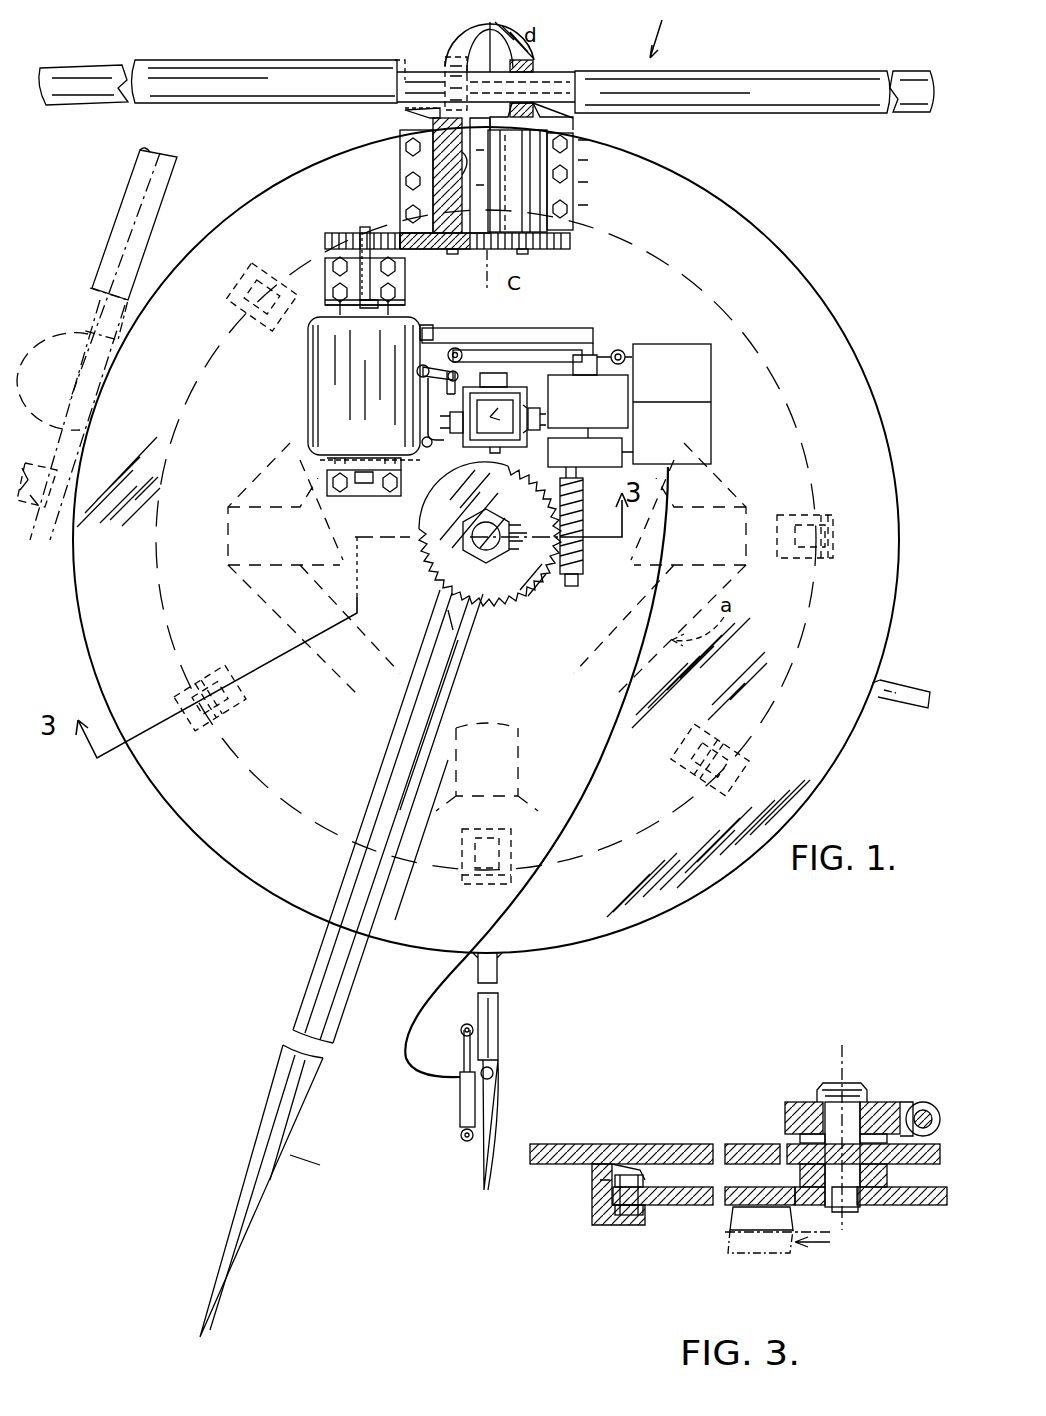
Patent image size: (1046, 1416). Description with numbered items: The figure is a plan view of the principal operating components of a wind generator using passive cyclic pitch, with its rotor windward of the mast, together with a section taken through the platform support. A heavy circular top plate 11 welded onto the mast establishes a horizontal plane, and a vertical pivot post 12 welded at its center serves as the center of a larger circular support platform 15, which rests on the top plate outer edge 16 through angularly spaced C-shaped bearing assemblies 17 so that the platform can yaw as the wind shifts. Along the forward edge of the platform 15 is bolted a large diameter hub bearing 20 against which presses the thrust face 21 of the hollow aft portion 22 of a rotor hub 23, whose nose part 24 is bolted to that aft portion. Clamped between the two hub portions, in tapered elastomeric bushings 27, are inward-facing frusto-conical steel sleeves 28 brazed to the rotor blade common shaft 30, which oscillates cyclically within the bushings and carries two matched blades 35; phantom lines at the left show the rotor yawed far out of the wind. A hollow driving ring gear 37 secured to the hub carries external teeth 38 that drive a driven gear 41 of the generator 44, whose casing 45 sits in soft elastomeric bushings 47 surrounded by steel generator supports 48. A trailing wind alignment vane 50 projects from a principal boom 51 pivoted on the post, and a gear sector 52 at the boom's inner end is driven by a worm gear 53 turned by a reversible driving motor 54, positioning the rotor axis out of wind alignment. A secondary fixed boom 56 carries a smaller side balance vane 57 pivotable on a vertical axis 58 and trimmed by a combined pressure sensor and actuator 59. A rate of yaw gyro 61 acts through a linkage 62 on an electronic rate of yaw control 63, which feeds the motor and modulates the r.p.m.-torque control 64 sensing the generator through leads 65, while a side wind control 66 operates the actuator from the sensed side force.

In FIG. 1, the top plate 11 is at (790, 385).
In FIG. 3, the top plate 11 is at (680, 1205).
In FIG. 1, the vertical pivot post 12 is at (488, 522).
In FIG. 3, the vertical pivot post 12 is at (850, 1114).
In FIG. 1, the support platform 15 is at (728, 198).
In FIG. 3, the support platform 15 is at (590, 1144).
In FIG. 3, the top plate outer edge 16 is at (592, 1197).
In FIG. 3, the C-shaped bearing assemblies 17 is at (622, 1228).
In FIG. 1, the hub bearing 20 is at (525, 192).
In FIG. 1, the thrust face 21 is at (575, 123).
In FIG. 1, the hollow aft portion 22 is at (400, 182).
In FIG. 1, the rotor hub 23 is at (405, 118).
In FIG. 1, the nose part 24 is at (533, 58).
In FIG. 1, the tapered elastomeric bushings 27 is at (450, 68).
In FIG. 1, the frusto-conical steel sleeves 28 is at (412, 62).
In FIG. 1, the rotor blade common shaft 30 is at (410, 116).
In FIG. 1, the rotor blades 35 is at (285, 62).
In FIG. 1, the driving ring gear 37 is at (428, 250).
In FIG. 1, the external teeth 38 is at (570, 245).
In FIG. 1, the driven gear 41 is at (365, 228).
In FIG. 1, the generator 44 is at (301, 381).
In FIG. 1, the generator casing 45 is at (340, 420).
In FIG. 1, the elastomeric bushings 47 is at (335, 278).
In FIG. 1, the generator supports 48 is at (408, 290).
In FIG. 1, the trailing wind alignment vane 50 is at (248, 1235).
In FIG. 1, the principal boom 51 is at (310, 1105).
In FIG. 1, the gear sector 52 is at (548, 590).
In FIG. 3, the gear sector 52 is at (786, 1098).
In FIG. 1, the worm gear 53 is at (585, 545).
In FIG. 3, the worm gear 53 is at (918, 1102).
In FIG. 1, the reversible driving motor 54 is at (583, 495).
In FIG. 1, the secondary fixed boom 56 is at (505, 1010).
In FIG. 1, the side balance vane 57 is at (498, 1132).
In FIG. 1, the vertical axis 58 is at (494, 1073).
In FIG. 1, the combined pressure sensor and actuator 59 is at (460, 1118).
In FIG. 1, the rate of yaw gyro 61 is at (497, 412).
In FIG. 1, the linkage 62 is at (476, 338).
In FIG. 1, the rate of yaw control 63 is at (712, 362).
In FIG. 1, the r.p.m.-torque electronic control 64 is at (614, 352).
In FIG. 1, the leads 65 is at (550, 330).
In FIG. 1, the side wind control 66 is at (712, 455).